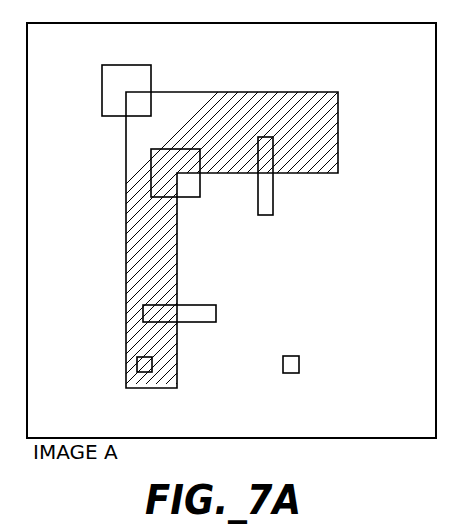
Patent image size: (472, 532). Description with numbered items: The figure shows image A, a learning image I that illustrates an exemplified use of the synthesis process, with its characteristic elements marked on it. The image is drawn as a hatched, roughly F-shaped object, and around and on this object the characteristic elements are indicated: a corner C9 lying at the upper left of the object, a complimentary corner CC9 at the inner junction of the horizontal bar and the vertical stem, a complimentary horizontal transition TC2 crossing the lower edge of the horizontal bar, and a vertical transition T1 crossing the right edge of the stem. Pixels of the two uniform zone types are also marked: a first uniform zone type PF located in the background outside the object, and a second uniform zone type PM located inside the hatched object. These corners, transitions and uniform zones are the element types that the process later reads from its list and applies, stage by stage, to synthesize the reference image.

The image region (hatched F shape) I is at (122, 257).
The corner C9 is at (108, 99).
The complimentary corner CC9 is at (185, 198).
The complimentary horizontal transition TC2 is at (273, 215).
The vertical transition T1 is at (216, 309).
The first uniform zone type PF is at (292, 357).
The second uniform zone type PM is at (145, 372).